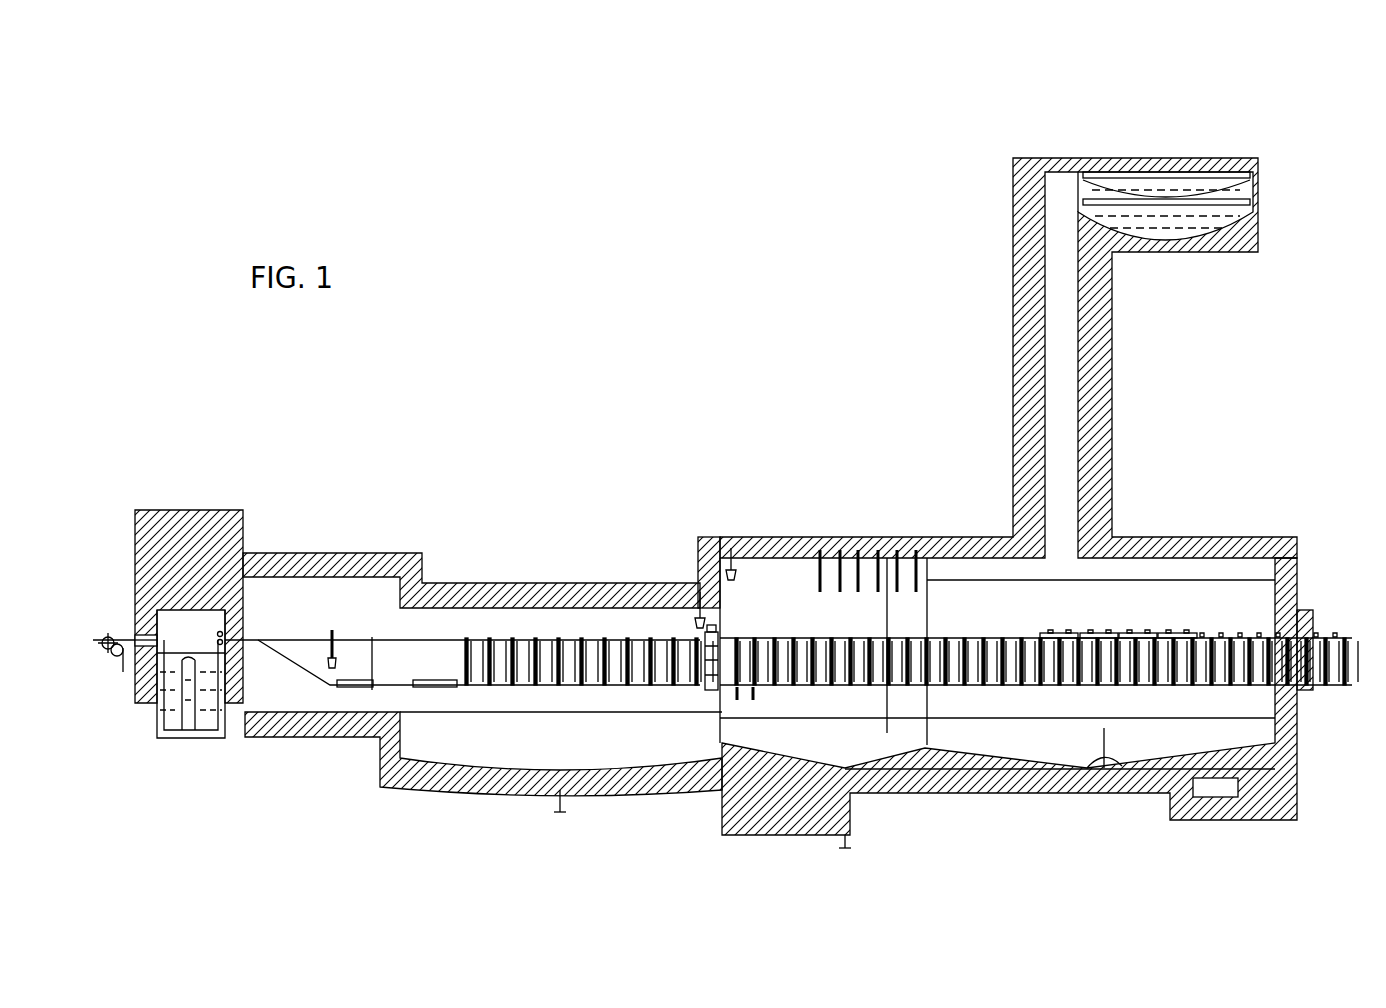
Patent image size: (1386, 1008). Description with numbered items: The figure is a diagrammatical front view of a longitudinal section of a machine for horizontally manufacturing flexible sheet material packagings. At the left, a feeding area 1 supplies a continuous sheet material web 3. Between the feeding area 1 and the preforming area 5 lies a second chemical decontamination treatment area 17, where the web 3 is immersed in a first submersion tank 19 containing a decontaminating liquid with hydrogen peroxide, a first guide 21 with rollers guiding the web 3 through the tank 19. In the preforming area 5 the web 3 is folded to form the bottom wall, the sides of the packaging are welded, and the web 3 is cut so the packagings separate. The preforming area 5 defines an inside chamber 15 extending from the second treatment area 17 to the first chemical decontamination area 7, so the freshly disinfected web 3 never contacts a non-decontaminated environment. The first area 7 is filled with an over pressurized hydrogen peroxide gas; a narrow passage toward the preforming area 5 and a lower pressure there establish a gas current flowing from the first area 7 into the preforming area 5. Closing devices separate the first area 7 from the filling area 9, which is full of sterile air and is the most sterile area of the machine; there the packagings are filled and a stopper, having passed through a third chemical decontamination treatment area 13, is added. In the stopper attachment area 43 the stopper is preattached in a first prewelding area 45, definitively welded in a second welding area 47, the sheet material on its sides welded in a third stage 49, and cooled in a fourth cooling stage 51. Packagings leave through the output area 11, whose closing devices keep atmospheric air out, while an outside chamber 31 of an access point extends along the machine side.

The feeding area 1 is at (100, 641).
The sheet material web 3 is at (123, 637).
The preforming area 5 is at (487, 650).
The first chemical decontamination area 7 is at (838, 618).
The filling area 9 is at (962, 607).
The output area 11 is at (1297, 687).
The third chemical decontamination treatment area 13 is at (1150, 192).
The inside chamber 15 is at (565, 618).
The second chemical decontamination treatment area 17 is at (187, 620).
The first submersion tank 19 is at (215, 722).
The first guide 21 is at (170, 740).
The outside chamber 31 is at (658, 592).
The stopper attachment area 43 is at (1120, 633).
The first stopper prewelding area 45 is at (1050, 665).
The second stopper welding area 47 is at (1092, 663).
The third stage 49 is at (1142, 672).
The fourth unit cooling stage 51 is at (1183, 658).